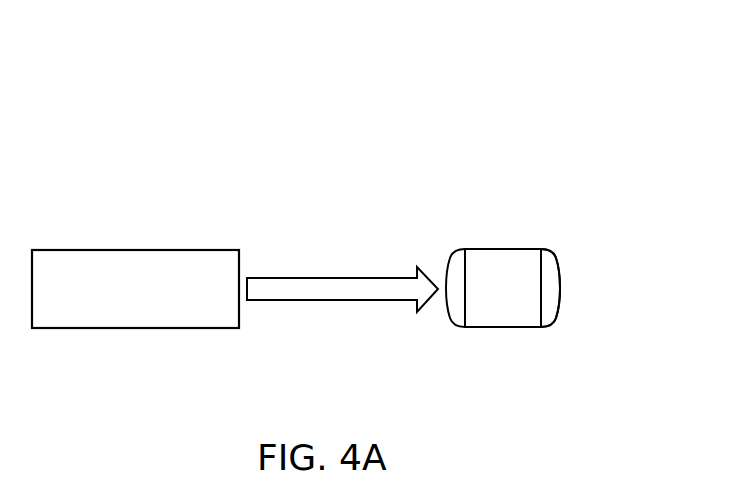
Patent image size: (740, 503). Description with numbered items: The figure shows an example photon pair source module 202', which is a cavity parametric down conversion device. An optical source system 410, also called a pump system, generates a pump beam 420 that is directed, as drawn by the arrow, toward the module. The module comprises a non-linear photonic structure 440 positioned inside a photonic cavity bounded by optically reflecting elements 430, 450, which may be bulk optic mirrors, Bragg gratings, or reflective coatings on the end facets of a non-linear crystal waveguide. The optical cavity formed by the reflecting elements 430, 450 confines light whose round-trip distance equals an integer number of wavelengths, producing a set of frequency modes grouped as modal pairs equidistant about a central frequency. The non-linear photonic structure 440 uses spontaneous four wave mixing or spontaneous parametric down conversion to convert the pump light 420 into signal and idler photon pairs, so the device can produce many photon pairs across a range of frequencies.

The photon pair source module 202' is at (330, 62).
The optical source system 410 is at (135, 248).
The pump light 420 is at (377, 277).
The optically reflecting element 430 is at (460, 250).
The non-linear photonic structure 440 is at (498, 249).
The optically reflecting element 450 is at (558, 310).